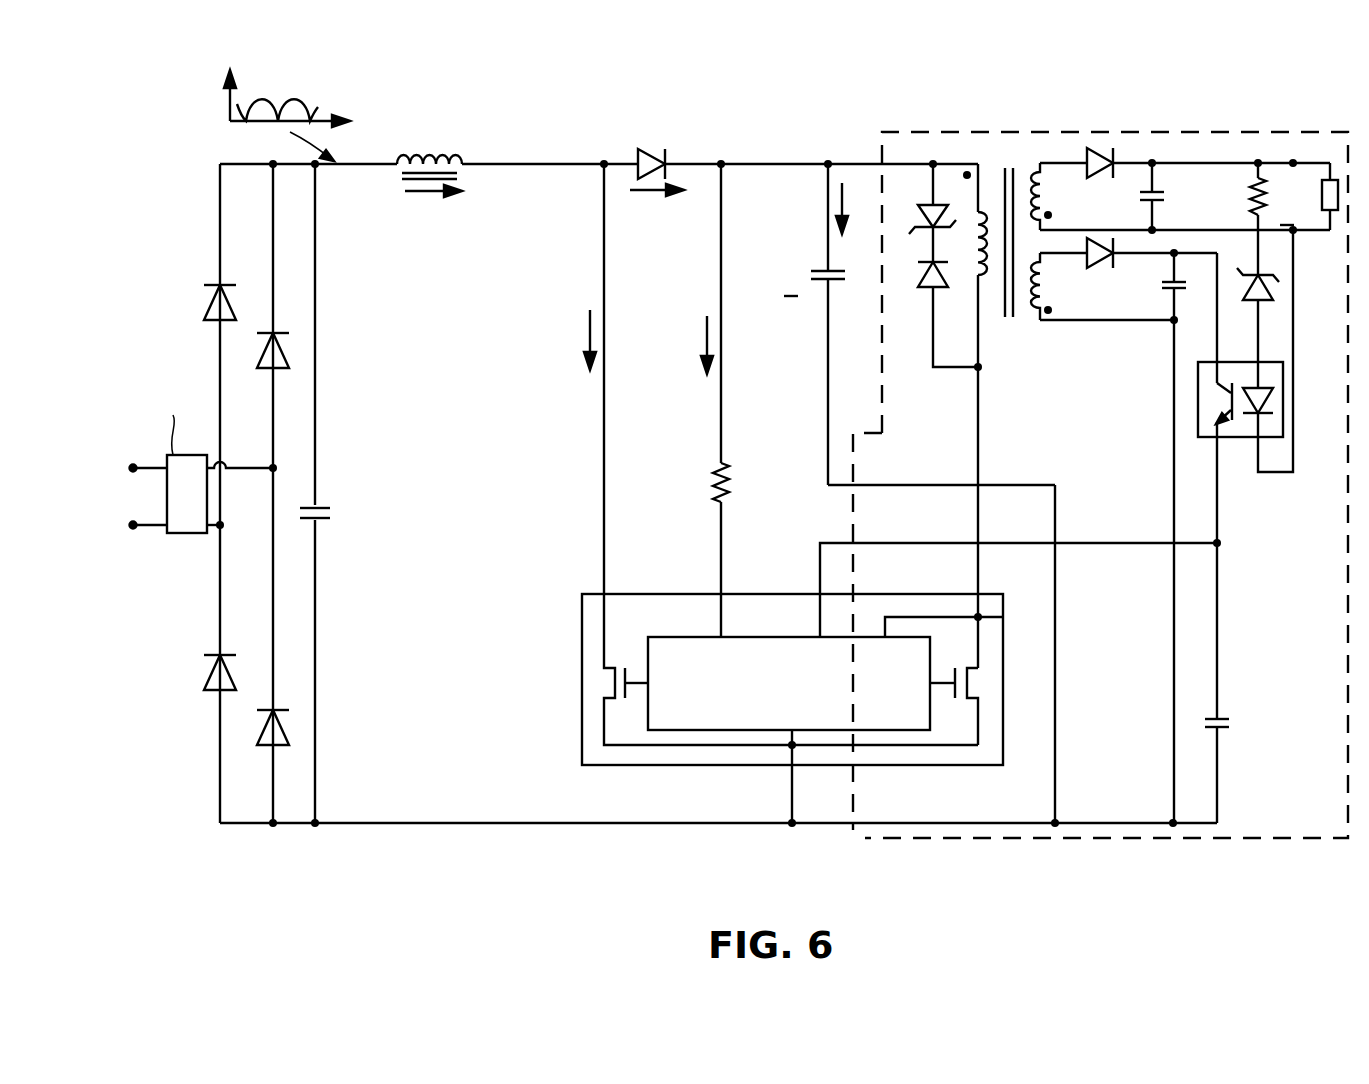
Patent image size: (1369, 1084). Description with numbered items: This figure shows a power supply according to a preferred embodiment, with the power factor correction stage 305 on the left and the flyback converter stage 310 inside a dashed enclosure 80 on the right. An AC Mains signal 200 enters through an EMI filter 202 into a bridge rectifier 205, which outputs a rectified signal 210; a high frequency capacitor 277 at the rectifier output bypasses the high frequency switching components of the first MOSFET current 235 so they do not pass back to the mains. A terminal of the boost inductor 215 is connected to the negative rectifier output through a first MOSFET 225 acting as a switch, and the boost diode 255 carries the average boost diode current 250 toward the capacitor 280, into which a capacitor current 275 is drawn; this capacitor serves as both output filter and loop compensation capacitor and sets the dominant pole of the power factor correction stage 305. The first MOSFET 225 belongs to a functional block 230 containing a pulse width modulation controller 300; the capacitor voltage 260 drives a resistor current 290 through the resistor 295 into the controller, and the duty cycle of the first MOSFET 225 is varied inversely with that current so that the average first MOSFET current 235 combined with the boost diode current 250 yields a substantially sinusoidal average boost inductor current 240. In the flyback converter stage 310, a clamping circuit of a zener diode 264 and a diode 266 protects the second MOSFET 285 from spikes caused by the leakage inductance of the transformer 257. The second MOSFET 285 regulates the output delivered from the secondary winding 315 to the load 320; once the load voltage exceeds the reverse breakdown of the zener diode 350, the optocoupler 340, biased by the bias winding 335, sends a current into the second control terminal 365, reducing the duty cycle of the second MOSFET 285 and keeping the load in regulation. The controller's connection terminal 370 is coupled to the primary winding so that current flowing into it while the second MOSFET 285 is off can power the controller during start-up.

The power supply / flyback converter enclosure 80 is at (1098, 132).
The AC Mains signal 200 is at (140, 511).
The EMI filter 202 is at (206, 450).
The bridge rectifier 205 is at (288, 873).
The rectified signal 210 is at (588, 170).
The boost inductor 215 is at (429, 142).
The first MOSFET 225 is at (781, 454).
The functional block 230 is at (760, 594).
The average first MOSFET current 235 is at (575, 340).
The average boost inductor current 240 is at (432, 196).
The average boost diode current 250 is at (657, 201).
The boost diode 255 is at (659, 149).
The transformer 257 is at (1031, 404).
The capacitor voltage 260 is at (798, 271).
The zener diode 264 is at (920, 199).
The diode 266 is at (931, 297).
The capacitor current 275 is at (859, 208).
The high frequency capacitor 277 is at (329, 501).
The capacitor 280 is at (933, 493).
The second MOSFET 285 is at (969, 706).
The resistor current 290 is at (692, 344).
The resistor 295 is at (702, 400).
The pulse width modulation controller 300 is at (789, 730).
The power factor correction stage 305 is at (288, 873).
The flyback converter stage 310 is at (848, 873).
The secondary winding 315 is at (1185, 211).
The load 320 is at (1313, 196).
The bias winding 335 is at (1124, 530).
The optocoupler 340 is at (1245, 526).
The zener diode 350 is at (1268, 328).
The second control terminal 365 is at (822, 632).
The connection terminal 370 is at (890, 632).